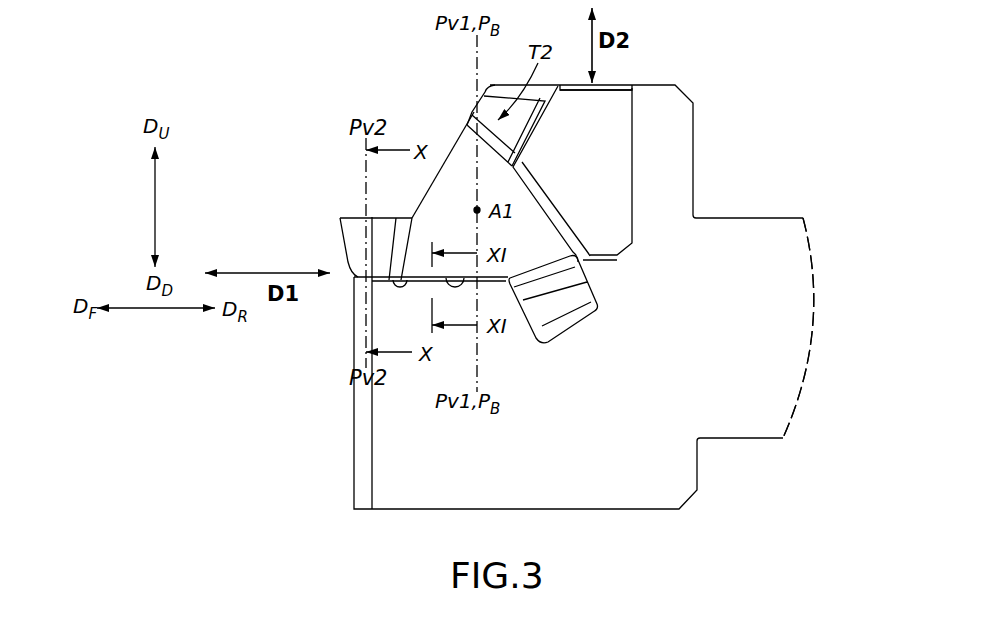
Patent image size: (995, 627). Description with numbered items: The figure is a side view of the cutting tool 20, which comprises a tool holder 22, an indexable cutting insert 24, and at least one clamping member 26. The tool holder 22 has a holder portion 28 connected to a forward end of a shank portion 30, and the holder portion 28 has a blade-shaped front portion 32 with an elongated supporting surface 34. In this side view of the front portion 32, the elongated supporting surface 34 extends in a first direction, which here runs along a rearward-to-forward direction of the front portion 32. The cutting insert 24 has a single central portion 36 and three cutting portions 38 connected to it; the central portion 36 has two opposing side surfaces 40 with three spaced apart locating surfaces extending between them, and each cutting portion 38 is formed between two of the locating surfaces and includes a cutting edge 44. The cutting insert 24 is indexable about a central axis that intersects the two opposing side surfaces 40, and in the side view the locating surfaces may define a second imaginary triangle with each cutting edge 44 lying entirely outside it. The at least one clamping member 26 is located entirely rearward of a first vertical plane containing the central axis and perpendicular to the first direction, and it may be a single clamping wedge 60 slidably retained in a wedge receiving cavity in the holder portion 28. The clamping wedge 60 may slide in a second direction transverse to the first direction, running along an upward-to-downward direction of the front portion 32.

The cutting tool 20 is at (713, 118).
The tool holder 22 is at (712, 237).
The indexable cutting insert 24 is at (471, 147).
The clamping member 26 is at (572, 136).
The holder portion 28 is at (633, 413).
The shank portion 30 is at (771, 316).
The front portion 32 is at (412, 435).
The elongated supporting surface 34 is at (388, 286).
The central portion 36 is at (532, 224).
The cutting portion 38 is at (353, 252).
The side surface 40 is at (452, 188).
The cutting edge 44 is at (347, 216).
The clamping wedge 60 is at (600, 133).